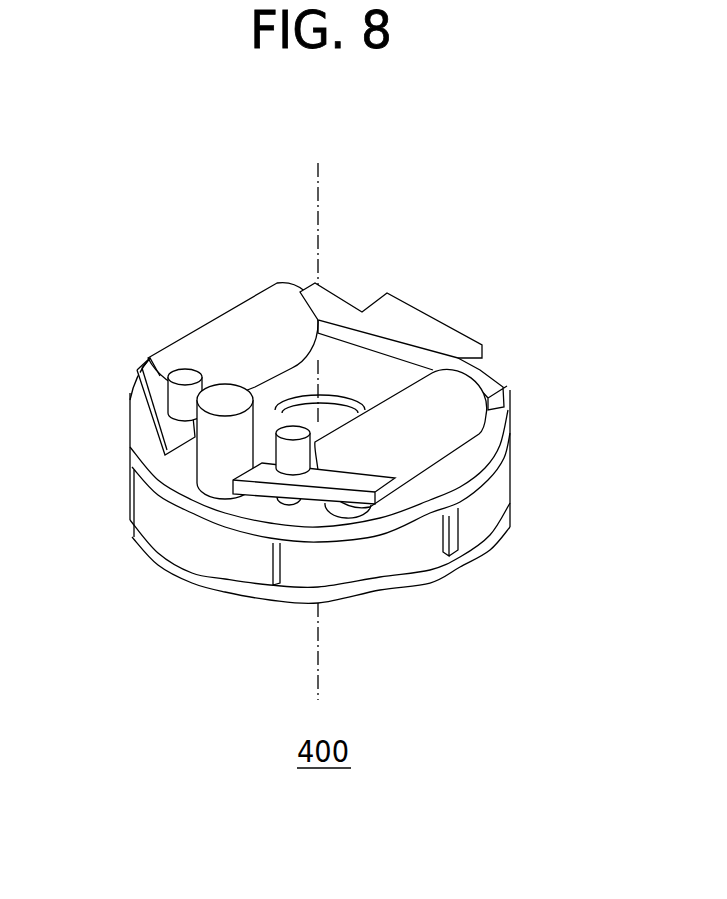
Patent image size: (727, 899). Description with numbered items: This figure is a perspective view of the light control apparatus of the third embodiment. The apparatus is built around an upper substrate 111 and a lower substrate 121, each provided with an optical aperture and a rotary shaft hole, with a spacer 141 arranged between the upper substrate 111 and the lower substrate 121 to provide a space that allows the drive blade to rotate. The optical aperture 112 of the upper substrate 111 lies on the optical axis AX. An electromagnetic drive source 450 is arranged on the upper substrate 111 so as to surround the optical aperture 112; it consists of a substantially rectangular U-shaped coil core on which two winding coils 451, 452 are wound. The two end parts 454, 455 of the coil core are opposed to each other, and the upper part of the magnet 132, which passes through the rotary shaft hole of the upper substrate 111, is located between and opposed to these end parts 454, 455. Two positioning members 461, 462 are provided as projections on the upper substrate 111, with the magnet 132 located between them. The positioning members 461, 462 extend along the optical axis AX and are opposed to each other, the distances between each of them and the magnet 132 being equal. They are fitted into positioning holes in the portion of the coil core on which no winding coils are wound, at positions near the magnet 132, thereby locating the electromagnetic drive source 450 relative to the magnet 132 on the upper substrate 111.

The optical axis AX is at (318, 190).
The upper substrate 111 is at (508, 437).
The optical aperture 112 is at (287, 432).
The lower substrate 121 is at (387, 563).
The magnet 132 is at (205, 453).
The spacer 141 is at (276, 557).
The electromagnetic drive source 450 is at (404, 290).
The winding coil 451 is at (218, 328).
The winding coil 452 is at (415, 322).
The end part of coil core 454 is at (170, 428).
The end part of coil core 455 is at (268, 477).
The positioning member 461 is at (148, 360).
The positioning member 462 is at (255, 393).